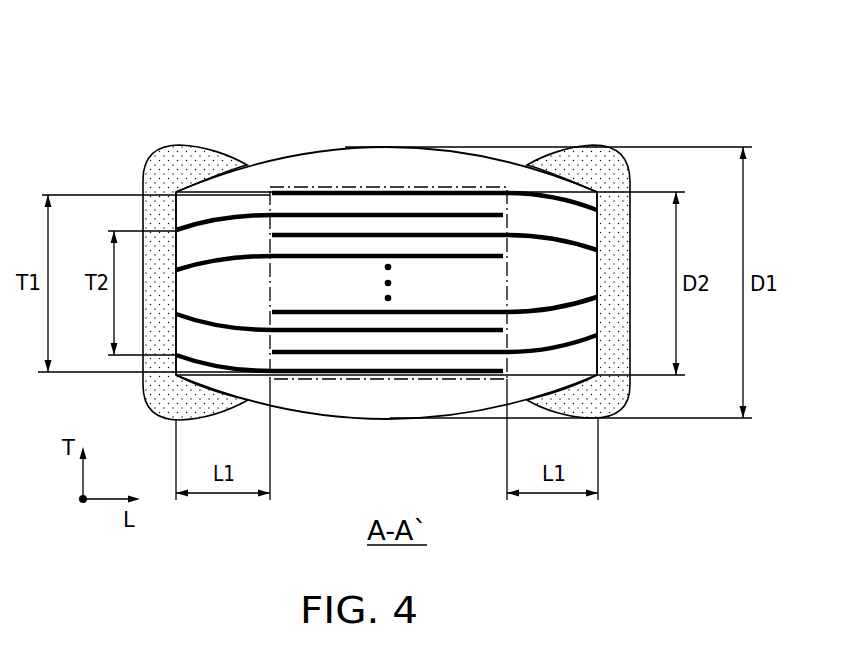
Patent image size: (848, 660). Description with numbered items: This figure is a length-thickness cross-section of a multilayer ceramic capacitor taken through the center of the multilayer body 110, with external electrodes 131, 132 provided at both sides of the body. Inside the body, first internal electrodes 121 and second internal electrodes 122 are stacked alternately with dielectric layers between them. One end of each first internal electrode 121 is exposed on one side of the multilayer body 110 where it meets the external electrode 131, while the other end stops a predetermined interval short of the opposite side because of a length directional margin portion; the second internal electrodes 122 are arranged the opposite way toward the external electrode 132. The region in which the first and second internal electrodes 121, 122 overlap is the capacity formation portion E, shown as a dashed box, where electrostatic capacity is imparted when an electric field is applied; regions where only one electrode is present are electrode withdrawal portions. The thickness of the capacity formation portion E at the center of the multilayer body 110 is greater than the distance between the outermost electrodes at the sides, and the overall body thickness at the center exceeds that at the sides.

The multilayer body 110 is at (390, 147).
The first internal electrode 121 is at (290, 212).
The second internal electrode 122 is at (497, 193).
The external electrode 131 is at (185, 160).
The external electrode 132 is at (604, 166).
The capacity formation portion E is at (326, 186).